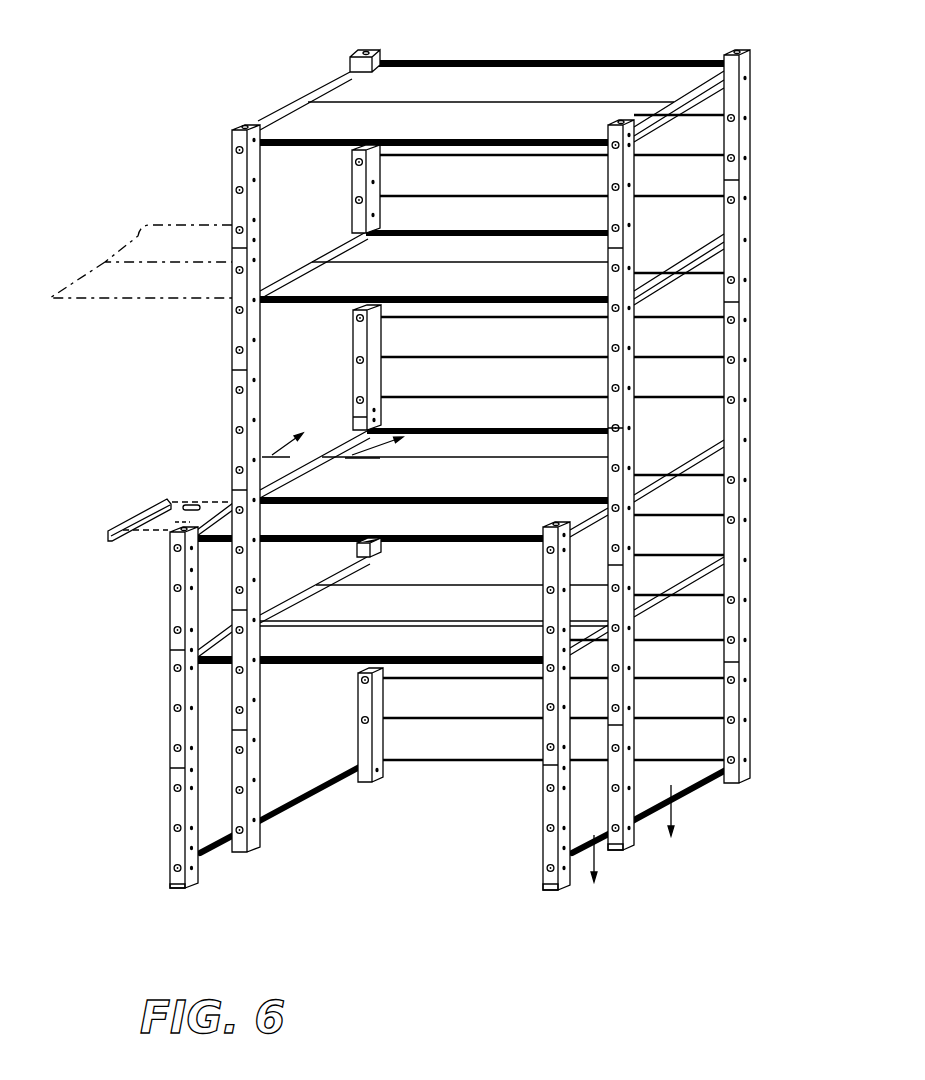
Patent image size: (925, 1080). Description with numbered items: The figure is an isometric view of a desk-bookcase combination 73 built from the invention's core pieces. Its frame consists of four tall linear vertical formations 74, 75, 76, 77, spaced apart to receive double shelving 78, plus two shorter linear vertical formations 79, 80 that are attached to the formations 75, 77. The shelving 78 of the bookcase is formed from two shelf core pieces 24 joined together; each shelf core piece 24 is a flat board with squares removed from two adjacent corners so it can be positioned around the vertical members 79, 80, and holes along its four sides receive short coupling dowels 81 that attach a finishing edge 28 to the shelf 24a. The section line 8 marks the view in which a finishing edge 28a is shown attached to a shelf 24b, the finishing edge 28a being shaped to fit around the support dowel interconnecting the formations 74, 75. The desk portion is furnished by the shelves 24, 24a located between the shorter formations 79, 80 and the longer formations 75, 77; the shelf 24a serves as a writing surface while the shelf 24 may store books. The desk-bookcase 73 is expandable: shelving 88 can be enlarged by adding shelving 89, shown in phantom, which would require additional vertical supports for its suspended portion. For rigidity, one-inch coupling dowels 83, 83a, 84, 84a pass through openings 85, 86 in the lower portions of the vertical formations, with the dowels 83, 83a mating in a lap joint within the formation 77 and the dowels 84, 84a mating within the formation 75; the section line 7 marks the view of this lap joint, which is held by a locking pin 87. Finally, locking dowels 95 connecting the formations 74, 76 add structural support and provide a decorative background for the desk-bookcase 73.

The desk-bookcase combination 73 is at (200, 93).
The linear vertical formation 74 is at (370, 50).
The linear vertical formation 75 is at (245, 125).
The linear vertical formation 76 is at (745, 50).
The linear vertical formation 77 is at (622, 118).
The double shelving 78 is at (488, 75).
The shorter linear vertical formation 79 is at (170, 600).
The shorter linear vertical formation 80 is at (543, 847).
The coupling dowel 81 is at (192, 505).
The coupling dowel 83 is at (708, 780).
The coupling dowel 83a is at (618, 850).
The coupling dowel 84 is at (320, 787).
The coupling dowel 84a is at (222, 842).
The opening 85 is at (553, 878).
The opening 86 is at (175, 880).
The locking pin 87 is at (632, 855).
The shelving 88 is at (700, 232).
The additional shelving 89 is at (175, 233).
The locking dowel 95 is at (462, 762).
The shelf core piece 24 is at (345, 645).
The shelf 24a is at (235, 497).
The shelf 24b is at (690, 440).
The finishing edge 28 is at (128, 524).
The finishing edge 28a is at (355, 437).
The section line 7- 7 is at (637, 853).
The section line 8- 8 is at (346, 432).